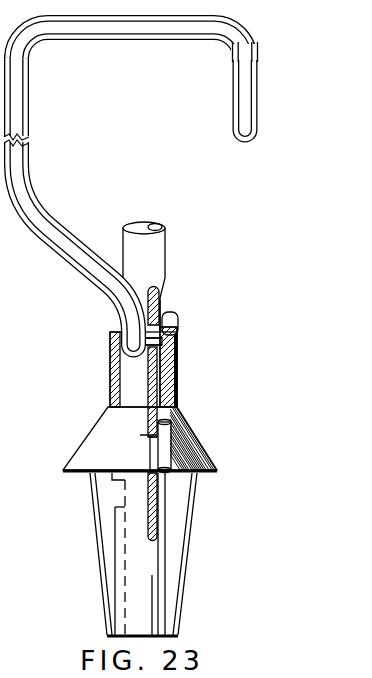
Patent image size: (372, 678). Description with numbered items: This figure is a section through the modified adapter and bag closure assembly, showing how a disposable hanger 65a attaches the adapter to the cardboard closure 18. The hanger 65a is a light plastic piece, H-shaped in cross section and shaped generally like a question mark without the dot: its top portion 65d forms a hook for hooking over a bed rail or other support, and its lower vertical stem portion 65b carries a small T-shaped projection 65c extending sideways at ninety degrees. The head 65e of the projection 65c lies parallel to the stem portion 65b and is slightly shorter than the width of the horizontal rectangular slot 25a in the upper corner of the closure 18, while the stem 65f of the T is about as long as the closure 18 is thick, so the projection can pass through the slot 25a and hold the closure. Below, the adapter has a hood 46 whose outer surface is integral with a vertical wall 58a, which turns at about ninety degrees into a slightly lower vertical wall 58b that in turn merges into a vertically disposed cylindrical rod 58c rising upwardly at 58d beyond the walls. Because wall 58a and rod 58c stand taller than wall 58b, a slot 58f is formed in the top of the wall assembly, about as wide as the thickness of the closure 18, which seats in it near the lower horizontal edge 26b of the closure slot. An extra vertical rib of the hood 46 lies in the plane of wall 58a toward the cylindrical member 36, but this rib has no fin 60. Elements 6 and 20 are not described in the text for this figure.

The tube 6 is at (152, 243).
The cardboard closure 18 is at (176, 358).
The shaft 20 is at (160, 292).
The horizontal rectangular slot 25a is at (158, 314).
The lower horizontal edge of slot 26b is at (146, 474).
The cylindrical member 36 is at (152, 590).
The hood 46 is at (166, 440).
The vertical wall 58a is at (145, 437).
The vertical wall 58b is at (122, 474).
The cylindrical rod 58c is at (170, 458).
The upper rod portion 58d is at (176, 415).
The slot 58f is at (150, 432).
The fin 60 is at (182, 503).
The hanger 65a is at (227, 98).
The lower vertical stem portion 65b is at (120, 318).
The T-shaped projection 65c is at (184, 318).
The hook top portion 65d is at (132, 31).
The head of T-shaped projection 65e is at (172, 332).
The stem of T-shaped projection 65f is at (150, 342).